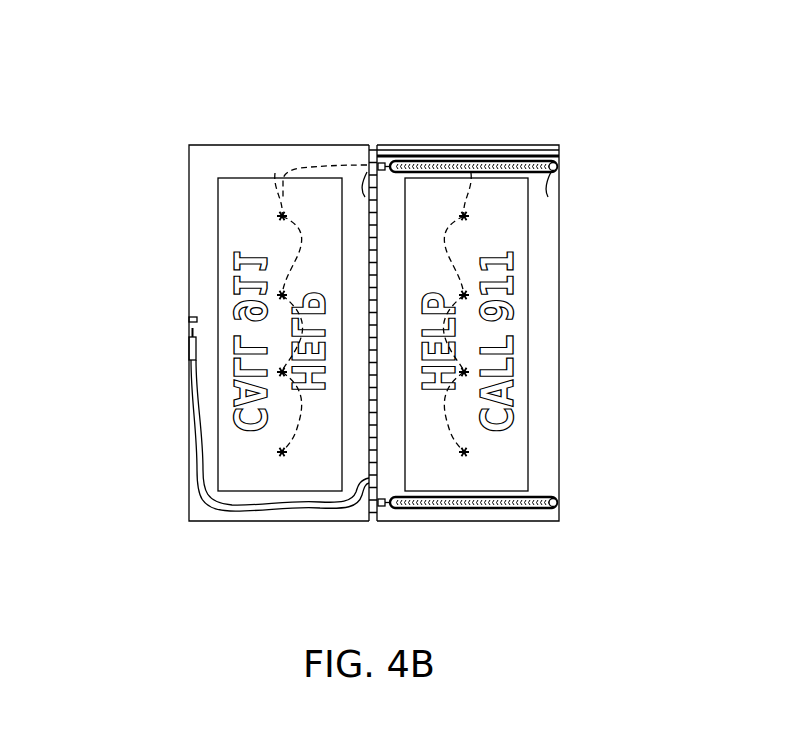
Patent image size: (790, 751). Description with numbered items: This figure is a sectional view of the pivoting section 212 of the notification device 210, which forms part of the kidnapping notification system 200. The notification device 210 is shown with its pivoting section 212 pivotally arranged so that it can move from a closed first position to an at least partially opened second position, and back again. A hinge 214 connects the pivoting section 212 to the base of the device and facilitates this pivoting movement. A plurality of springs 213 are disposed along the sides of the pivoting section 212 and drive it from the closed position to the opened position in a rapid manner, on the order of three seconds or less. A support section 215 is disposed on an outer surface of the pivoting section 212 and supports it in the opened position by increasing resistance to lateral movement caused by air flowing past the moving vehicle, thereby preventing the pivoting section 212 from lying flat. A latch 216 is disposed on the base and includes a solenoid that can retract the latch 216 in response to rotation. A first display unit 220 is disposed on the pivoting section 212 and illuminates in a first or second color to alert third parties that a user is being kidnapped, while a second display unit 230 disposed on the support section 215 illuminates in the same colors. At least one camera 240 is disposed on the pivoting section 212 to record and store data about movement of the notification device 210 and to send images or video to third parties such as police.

The kidnapping notification system 200 is at (171, 117).
The notification device 210 is at (179, 423).
The pivoting section 212 is at (189, 235).
The plurality of springs 213 is at (557, 166).
The hinge 214 is at (372, 145).
The support section 215 is at (553, 324).
The latch 216 is at (187, 352).
The first display unit 220 is at (237, 189).
The second display unit 230 is at (520, 210).
The camera 240 is at (189, 320).